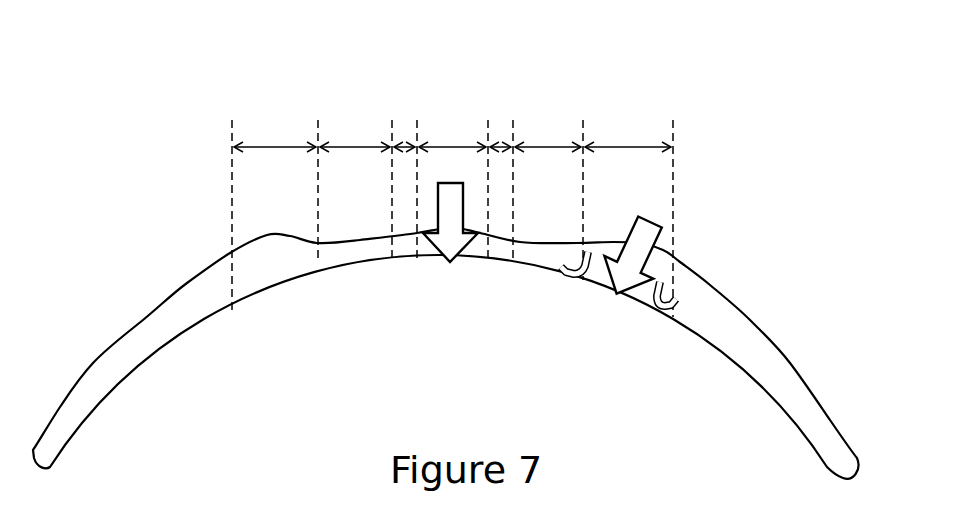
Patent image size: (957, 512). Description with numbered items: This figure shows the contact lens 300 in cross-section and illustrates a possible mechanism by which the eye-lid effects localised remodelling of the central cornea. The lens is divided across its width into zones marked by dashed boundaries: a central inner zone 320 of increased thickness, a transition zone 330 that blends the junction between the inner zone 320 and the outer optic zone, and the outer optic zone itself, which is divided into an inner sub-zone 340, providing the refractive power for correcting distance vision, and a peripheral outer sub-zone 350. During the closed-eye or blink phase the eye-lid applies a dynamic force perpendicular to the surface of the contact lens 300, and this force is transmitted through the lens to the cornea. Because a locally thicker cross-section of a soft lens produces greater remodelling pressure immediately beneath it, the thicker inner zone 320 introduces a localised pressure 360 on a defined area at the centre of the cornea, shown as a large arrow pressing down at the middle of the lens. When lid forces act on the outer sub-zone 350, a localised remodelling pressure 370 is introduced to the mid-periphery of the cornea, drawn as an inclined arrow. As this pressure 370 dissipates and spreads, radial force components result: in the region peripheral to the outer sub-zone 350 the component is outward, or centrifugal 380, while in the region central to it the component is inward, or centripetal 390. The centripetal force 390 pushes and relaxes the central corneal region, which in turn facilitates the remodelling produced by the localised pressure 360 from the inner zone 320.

The contact lens 300 is at (188, 328).
The inner zone 320 is at (456, 132).
The transition zone 330 is at (503, 129).
The inner sub-zone 340 is at (557, 131).
The outer sub-zone 350 is at (629, 158).
The localised pressure 360 is at (441, 254).
The localised remodelling pressure 370 is at (614, 294).
The outward (centrifugal) radial force component 380 is at (663, 326).
The inward (centripetal) radial force component 390 is at (565, 280).